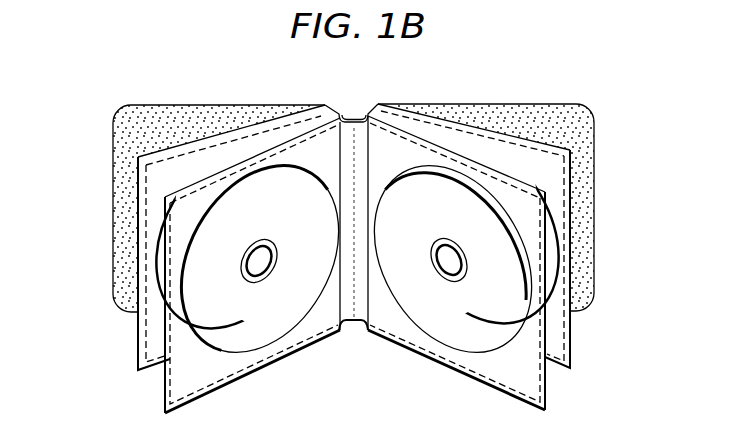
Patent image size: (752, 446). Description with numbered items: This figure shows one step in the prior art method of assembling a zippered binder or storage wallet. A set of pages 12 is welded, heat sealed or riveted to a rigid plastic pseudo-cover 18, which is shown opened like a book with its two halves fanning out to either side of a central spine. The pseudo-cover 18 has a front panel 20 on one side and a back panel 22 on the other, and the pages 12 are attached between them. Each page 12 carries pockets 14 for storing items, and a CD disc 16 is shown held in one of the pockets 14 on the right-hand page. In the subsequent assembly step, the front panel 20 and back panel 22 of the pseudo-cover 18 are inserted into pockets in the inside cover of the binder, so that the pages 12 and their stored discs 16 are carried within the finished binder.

The pages 12 is at (248, 364).
The pockets 14 is at (397, 150).
The CD disc 16 is at (451, 331).
The pseudo-cover 18 is at (596, 108).
The front panel 20 is at (118, 108).
The back panel 22 is at (502, 104).